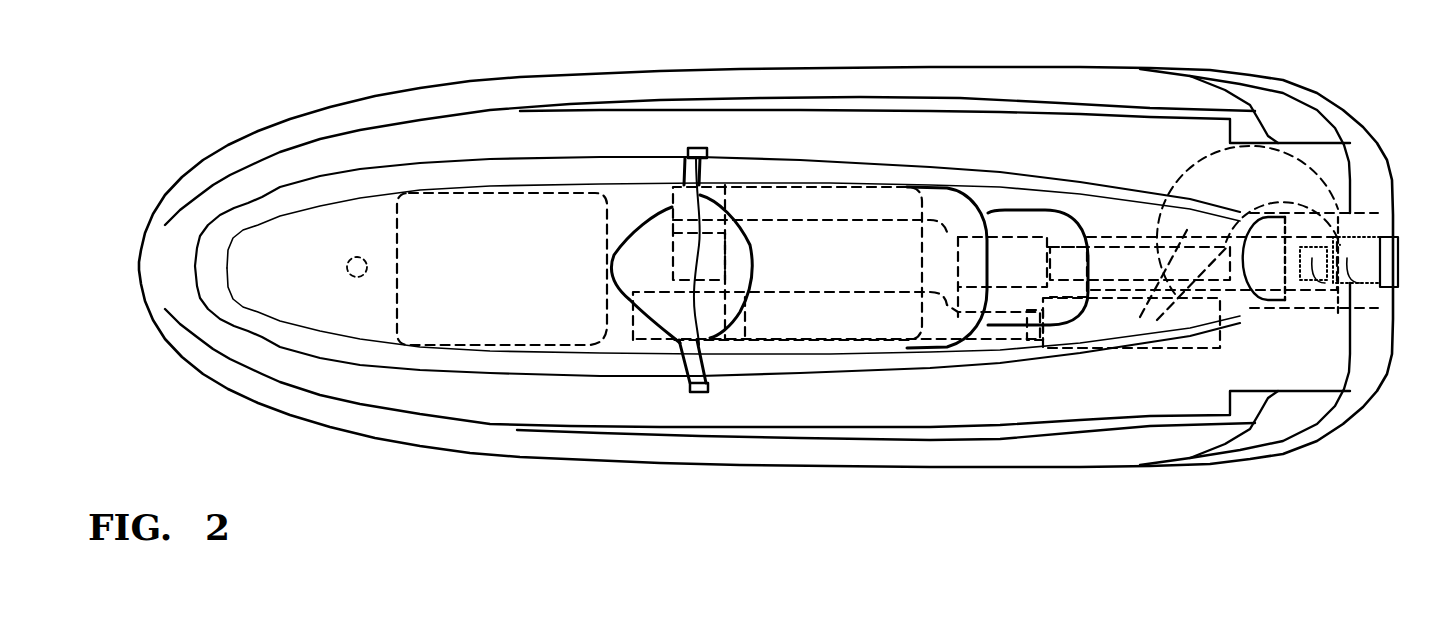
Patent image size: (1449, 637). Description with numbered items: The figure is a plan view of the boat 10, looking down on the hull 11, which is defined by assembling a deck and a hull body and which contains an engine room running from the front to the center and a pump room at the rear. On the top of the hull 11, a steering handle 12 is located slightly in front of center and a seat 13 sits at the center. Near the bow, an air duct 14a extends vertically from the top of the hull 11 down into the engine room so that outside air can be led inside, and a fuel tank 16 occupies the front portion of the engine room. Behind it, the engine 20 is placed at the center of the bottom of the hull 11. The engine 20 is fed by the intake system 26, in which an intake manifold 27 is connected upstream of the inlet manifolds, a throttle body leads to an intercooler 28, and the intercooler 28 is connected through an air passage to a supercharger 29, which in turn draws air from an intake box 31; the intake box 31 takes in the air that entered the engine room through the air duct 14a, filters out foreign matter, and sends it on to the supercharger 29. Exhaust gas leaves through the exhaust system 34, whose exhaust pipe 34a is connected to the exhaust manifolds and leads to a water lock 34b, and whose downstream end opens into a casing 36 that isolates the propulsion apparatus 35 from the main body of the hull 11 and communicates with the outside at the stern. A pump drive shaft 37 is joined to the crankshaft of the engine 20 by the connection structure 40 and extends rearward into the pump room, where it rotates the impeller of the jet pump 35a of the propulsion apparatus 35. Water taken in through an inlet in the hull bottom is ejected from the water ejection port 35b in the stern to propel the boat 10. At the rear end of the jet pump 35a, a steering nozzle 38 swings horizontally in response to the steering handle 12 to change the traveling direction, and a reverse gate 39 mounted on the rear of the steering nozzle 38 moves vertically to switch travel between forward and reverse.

The boat 10 is at (1199, 42).
The hull 11 is at (307, 113).
The steering handle 12 is at (697, 148).
The seat 13 is at (947, 190).
The air duct 14a is at (357, 278).
The fuel tank 16 is at (504, 346).
The engine 20 is at (933, 237).
The intake system 26 is at (658, 345).
The intake manifold 27 is at (836, 187).
The intercooler 28 is at (673, 215).
The supercharger 29 is at (673, 257).
The intake box 31 is at (633, 318).
The exhaust system 34 is at (795, 330).
The exhaust pipe 34a is at (855, 342).
The water lock 34b is at (1137, 348).
The propulsion apparatus 35 is at (1298, 298).
The jet pump 35a is at (1262, 282).
The water ejection port 35b is at (1350, 310).
The casing 36 is at (1360, 223).
The pump drive shaft 37 is at (1140, 247).
The steering nozzle 38 is at (1372, 293).
The reverse gate 39 is at (1398, 262).
The connection structure 40 is at (1043, 233).